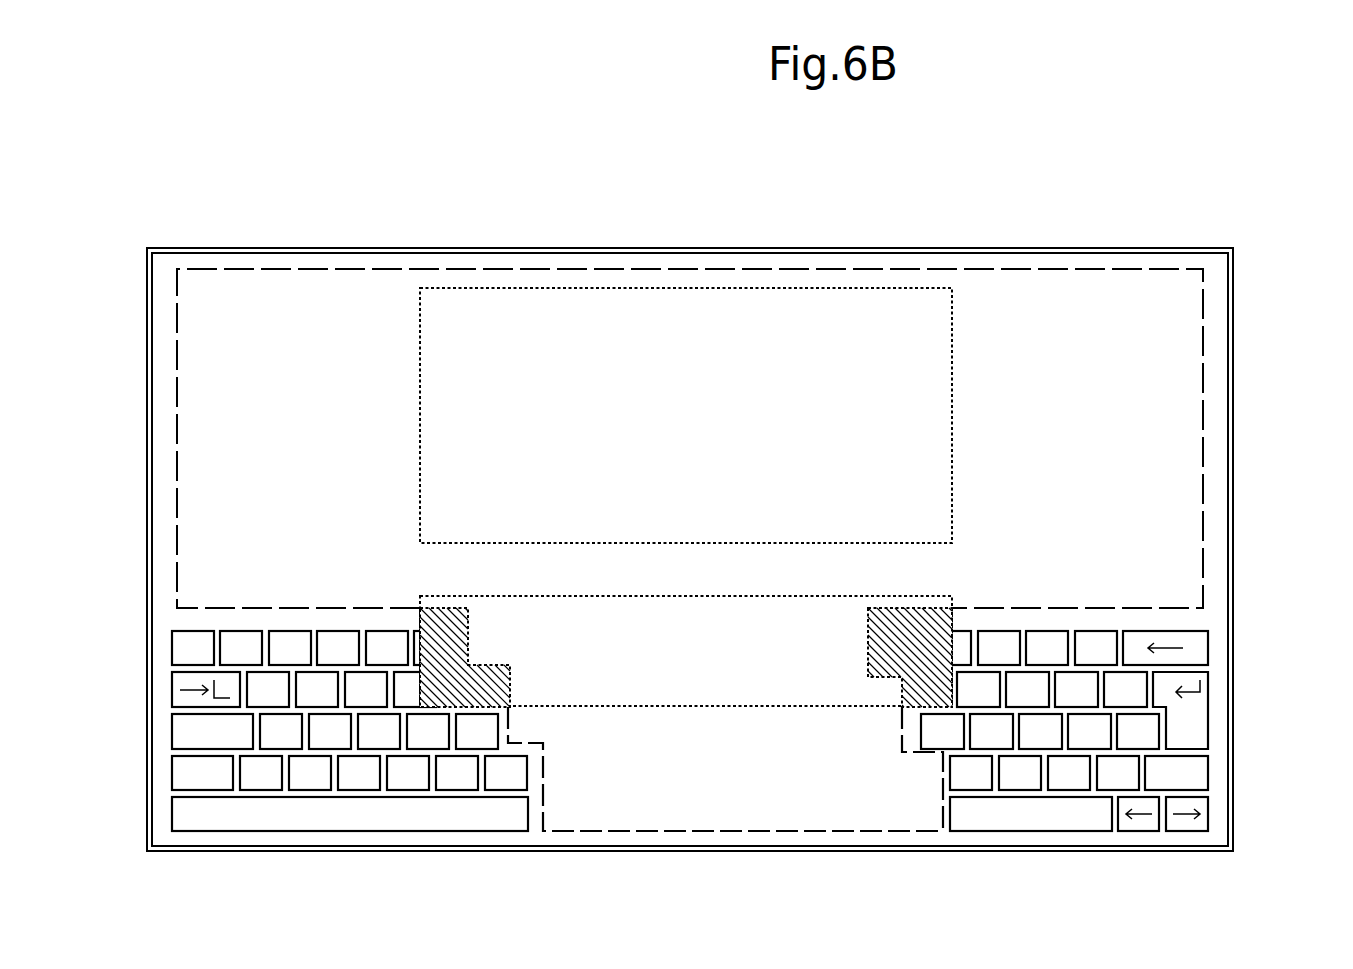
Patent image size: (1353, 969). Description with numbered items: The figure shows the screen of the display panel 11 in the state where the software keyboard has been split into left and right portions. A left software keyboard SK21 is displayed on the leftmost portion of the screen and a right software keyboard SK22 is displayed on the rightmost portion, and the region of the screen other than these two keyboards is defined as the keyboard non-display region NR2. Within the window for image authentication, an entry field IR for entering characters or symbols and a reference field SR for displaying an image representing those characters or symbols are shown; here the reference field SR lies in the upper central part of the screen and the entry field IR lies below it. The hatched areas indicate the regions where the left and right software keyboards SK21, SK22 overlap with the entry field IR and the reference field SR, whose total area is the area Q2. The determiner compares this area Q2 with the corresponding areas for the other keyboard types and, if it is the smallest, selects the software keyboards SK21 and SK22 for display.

The display panel 11 is at (315, 248).
The keyboard non-display region NR2 is at (1203, 450).
The reference field SR is at (952, 400).
The entry field IR is at (898, 594).
The left software keyboard SK21 is at (172, 731).
The right software keyboard SK22 is at (1208, 740).
The total area of overlapping regions Q2 is at (868, 677).